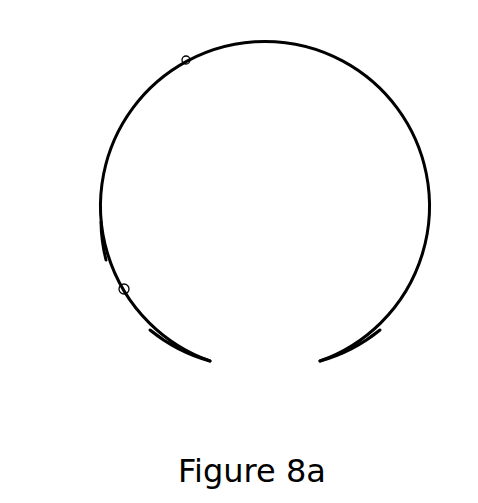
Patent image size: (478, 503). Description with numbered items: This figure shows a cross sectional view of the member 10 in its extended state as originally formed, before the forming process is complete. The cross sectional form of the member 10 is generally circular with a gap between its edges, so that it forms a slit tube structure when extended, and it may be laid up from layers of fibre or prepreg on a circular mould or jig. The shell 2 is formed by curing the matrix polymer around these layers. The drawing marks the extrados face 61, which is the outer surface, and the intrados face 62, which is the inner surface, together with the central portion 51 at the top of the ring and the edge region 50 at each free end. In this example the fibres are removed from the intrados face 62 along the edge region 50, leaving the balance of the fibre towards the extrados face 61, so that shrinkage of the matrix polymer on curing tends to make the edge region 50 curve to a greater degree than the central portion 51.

The member 10 is at (42, 67).
The shell 2 is at (369, 77).
The edge region 50 is at (213, 353).
The central portion 51 is at (191, 63).
The extrados face 61 is at (102, 242).
The intrados face 62 is at (124, 296).